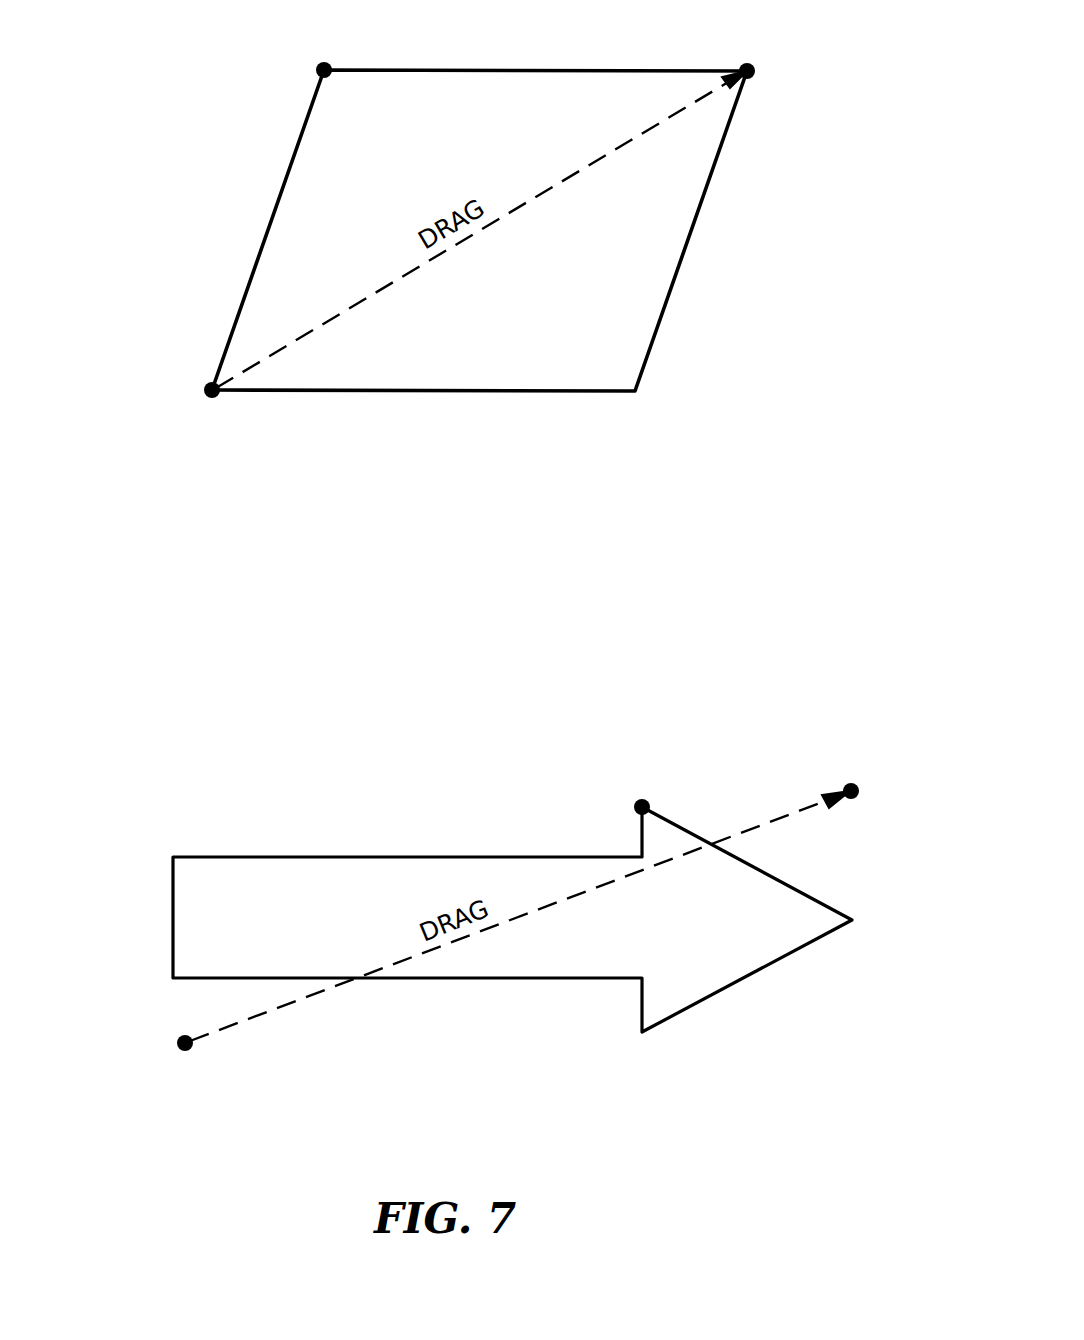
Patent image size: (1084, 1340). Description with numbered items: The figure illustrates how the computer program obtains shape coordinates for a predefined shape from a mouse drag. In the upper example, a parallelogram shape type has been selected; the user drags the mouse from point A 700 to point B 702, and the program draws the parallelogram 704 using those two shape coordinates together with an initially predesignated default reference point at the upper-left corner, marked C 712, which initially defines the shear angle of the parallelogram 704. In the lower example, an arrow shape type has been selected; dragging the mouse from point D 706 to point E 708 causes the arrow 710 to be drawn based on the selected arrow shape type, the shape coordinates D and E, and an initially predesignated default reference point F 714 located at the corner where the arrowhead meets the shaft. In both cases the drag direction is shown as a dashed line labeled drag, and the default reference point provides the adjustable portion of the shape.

The point A 700 is at (219, 396).
The point B 702 is at (745, 67).
The parallelogram 704 is at (678, 267).
The point D 706 is at (178, 1045).
The point E 708 is at (860, 792).
The arrow 710 is at (248, 857).
The point C 712 is at (329, 62).
The reference point F 714 is at (650, 803).